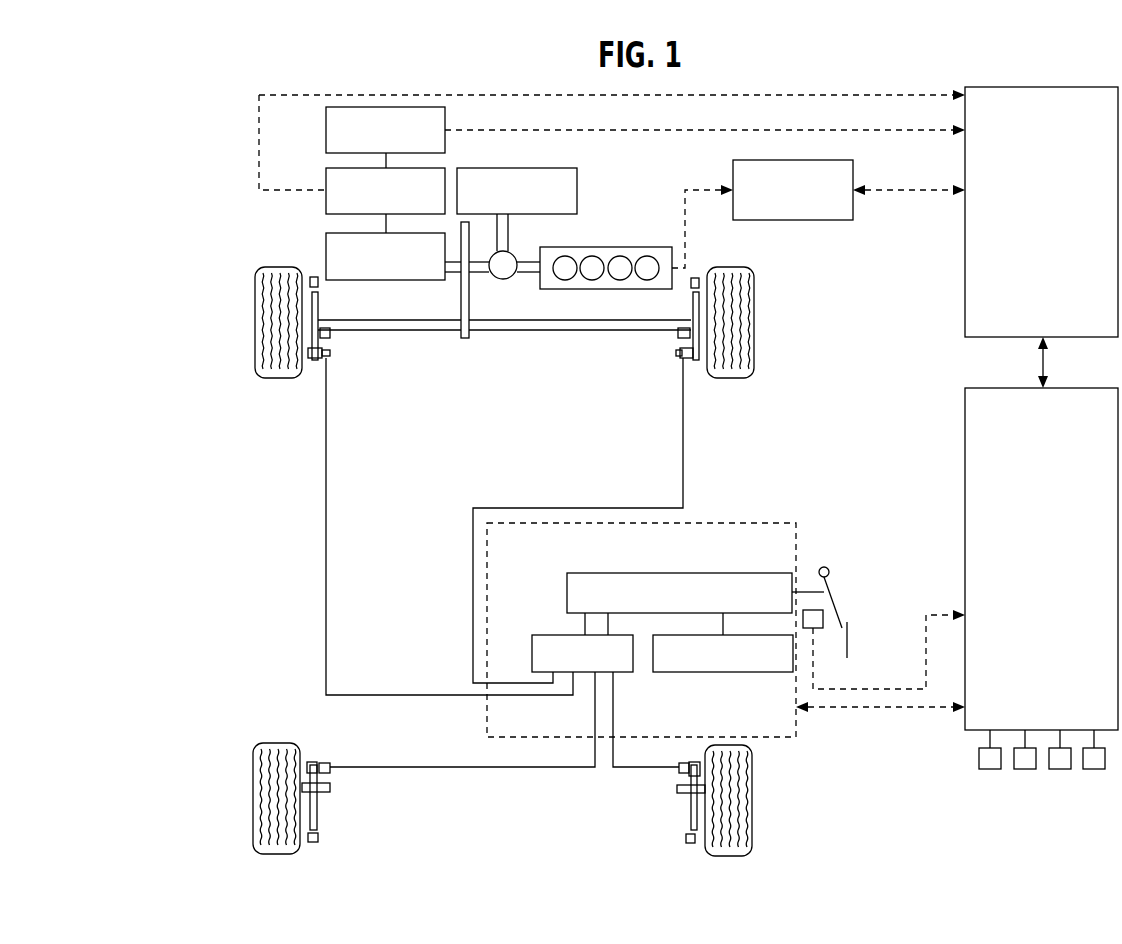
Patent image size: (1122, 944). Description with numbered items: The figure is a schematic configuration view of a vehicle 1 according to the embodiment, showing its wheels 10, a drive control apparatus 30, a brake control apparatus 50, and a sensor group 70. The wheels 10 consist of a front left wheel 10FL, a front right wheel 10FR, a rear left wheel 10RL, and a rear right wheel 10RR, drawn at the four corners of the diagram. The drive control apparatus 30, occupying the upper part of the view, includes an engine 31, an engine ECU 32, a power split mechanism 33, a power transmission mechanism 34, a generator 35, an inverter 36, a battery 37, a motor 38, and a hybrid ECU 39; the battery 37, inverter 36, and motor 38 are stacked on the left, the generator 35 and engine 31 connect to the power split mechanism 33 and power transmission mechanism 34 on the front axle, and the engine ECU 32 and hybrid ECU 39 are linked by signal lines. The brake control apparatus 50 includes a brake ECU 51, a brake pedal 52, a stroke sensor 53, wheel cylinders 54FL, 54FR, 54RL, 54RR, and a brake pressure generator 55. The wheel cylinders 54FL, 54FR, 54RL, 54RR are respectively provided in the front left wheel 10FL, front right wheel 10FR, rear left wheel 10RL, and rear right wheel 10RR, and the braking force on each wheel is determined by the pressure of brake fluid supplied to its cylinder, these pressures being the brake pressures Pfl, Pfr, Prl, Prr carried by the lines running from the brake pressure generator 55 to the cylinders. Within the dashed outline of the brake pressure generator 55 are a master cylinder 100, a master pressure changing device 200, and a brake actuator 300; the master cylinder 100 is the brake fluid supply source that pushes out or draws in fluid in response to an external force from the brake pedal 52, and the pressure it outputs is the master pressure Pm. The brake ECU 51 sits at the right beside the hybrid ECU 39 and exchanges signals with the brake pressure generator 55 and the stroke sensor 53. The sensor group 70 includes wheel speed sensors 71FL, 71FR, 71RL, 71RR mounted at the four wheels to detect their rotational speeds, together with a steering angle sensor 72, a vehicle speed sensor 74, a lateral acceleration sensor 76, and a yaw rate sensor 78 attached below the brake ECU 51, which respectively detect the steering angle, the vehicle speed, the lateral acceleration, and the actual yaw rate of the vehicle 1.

The vehicle 1 is at (890, 395).
The wheels 10 is at (769, 387).
The front left wheel 10FL is at (255, 308).
The front right wheel 10FR is at (757, 325).
The rear left wheel 10RL is at (253, 808).
The rear right wheel 10RR is at (755, 790).
The drive control apparatus 30 is at (865, 248).
The engine 31 is at (622, 247).
The engine electronic control unit 32 is at (853, 172).
The power split mechanism 33 is at (507, 278).
The power transmission mechanism 34 is at (469, 300).
The generator 35 is at (577, 181).
The inverter 36 is at (326, 178).
The battery 37 is at (326, 134).
The motor 38 is at (420, 280).
The hybrid ECU 39 is at (964, 258).
The brake control apparatus 50 is at (833, 473).
The brake ECU 51 is at (964, 504).
The brake pedal 52 is at (830, 608).
The stroke sensor 53 is at (815, 629).
The wheel cylinder 54FL is at (331, 354).
The wheel cylinder 54FR is at (675, 360).
The wheel cylinder 54RL is at (331, 768).
The wheel cylinder 54RR is at (679, 768).
The brake pressure generator 55 is at (770, 522).
The sensor group 70 is at (1037, 841).
The wheel speed sensor 71FL is at (312, 277).
The wheel speed sensor 71FR is at (695, 278).
The wheel speed sensor 71RL is at (318, 838).
The wheel speed sensor 71RR is at (686, 838).
The steering angle sensor 72 is at (990, 769).
The vehicle speed sensor 74 is at (1025, 769).
The lateral acceleration sensor 76 is at (1060, 769).
The yaw rate sensor 78 is at (1094, 769).
The master cylinder 100 is at (665, 573).
The master pressure changing device 200 is at (710, 672).
The brake actuator 300 is at (545, 635).
The brake pressure Pfl is at (327, 452).
The brake pressure Pfr is at (683, 443).
The brake pressure Prl is at (490, 770).
The brake pressure Prr is at (613, 770).
The master pressure Pm is at (582, 625).